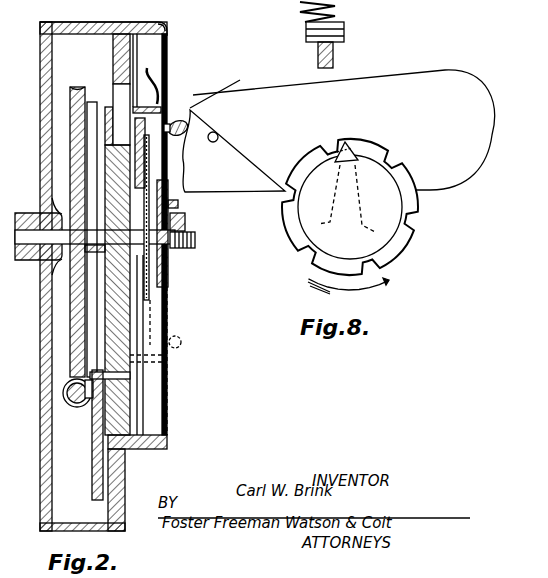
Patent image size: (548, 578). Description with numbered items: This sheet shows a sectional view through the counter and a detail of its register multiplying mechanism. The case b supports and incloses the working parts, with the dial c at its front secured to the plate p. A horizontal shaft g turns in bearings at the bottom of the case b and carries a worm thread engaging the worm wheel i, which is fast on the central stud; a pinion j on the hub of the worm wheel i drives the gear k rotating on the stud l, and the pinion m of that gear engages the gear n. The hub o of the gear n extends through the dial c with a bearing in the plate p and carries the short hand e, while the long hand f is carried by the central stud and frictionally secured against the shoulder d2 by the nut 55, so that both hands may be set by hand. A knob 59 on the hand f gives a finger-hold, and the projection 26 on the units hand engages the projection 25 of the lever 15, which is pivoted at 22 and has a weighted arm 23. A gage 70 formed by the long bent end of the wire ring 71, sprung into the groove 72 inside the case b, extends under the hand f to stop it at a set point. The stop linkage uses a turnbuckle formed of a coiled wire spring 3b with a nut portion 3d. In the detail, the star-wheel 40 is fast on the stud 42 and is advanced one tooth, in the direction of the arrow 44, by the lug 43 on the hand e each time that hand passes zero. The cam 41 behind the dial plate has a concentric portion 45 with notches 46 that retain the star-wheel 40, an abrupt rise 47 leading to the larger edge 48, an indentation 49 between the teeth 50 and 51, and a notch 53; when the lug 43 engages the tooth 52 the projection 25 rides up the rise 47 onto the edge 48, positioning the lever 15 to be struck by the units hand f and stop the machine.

In FIG. 2, the case b is at (40, 108).
In FIG. 2, the pinion j is at (70, 265).
In FIG. 2, the shoulder d2 is at (160, 250).
In FIG. 2, the nut 55 is at (196, 242).
In FIG. 2, the worm wheel i is at (72, 342).
In FIG. 2, the gear n is at (106, 108).
In FIG. 2, the plate p is at (114, 55).
In FIG. 2, the dial c is at (138, 55).
In FIG. 2, the groove 72 is at (160, 27).
In FIG. 2, the long hand f is at (158, 95).
In FIG. 2, the projection 26 is at (150, 104).
In FIG. 2, the lug 43 is at (163, 110).
In FIG. 8, the lug 43 is at (352, 165).
In FIG. 2, the knob 59 is at (180, 124).
In FIG. 2, the short hand e is at (150, 150).
In FIG. 2, the stud 42 is at (146, 165).
In FIG. 2, the hub o is at (160, 270).
In FIG. 2, the cam 41 is at (168, 205).
In FIG. 8, the cam 41 is at (401, 181).
In FIG. 2, the star-wheel 40 is at (186, 218).
In FIG. 8, the star-wheel 40 is at (350, 207).
In FIG. 2, the wire ring 71 is at (150, 335).
In FIG. 2, the gage 70 is at (144, 409).
In FIG. 2, the stud l is at (118, 376).
In FIG. 2, the horizontal shaft g is at (63, 394).
In FIG. 2, the pinion m is at (90, 400).
In FIG. 2, the gear k is at (92, 457).
In FIG. 8, the coiled wire spring 3b is at (305, 12).
In FIG. 8, the nut portion 3d is at (346, 38).
In FIG. 8, the arm 23 is at (339, 131).
In FIG. 8, the lever 15 is at (251, 95).
In FIG. 8, the pivot 22 is at (218, 136).
In FIG. 8, the abrupt rise 47 is at (338, 148).
In FIG. 8, the projection 25 is at (346, 150).
In FIG. 8, the edge 48 is at (350, 158).
In FIG. 8, the notch 53 is at (392, 152).
In FIG. 8, the tooth 51 is at (378, 168).
In FIG. 8, the tooth 52 is at (338, 160).
In FIG. 8, the indentation 49 is at (424, 198).
In FIG. 8, the concentric portion 45 is at (286, 205).
In FIG. 8, the notches 46 is at (290, 226).
In FIG. 8, the tooth 50 is at (400, 244).
In FIG. 8, the arrow 44 is at (348, 290).